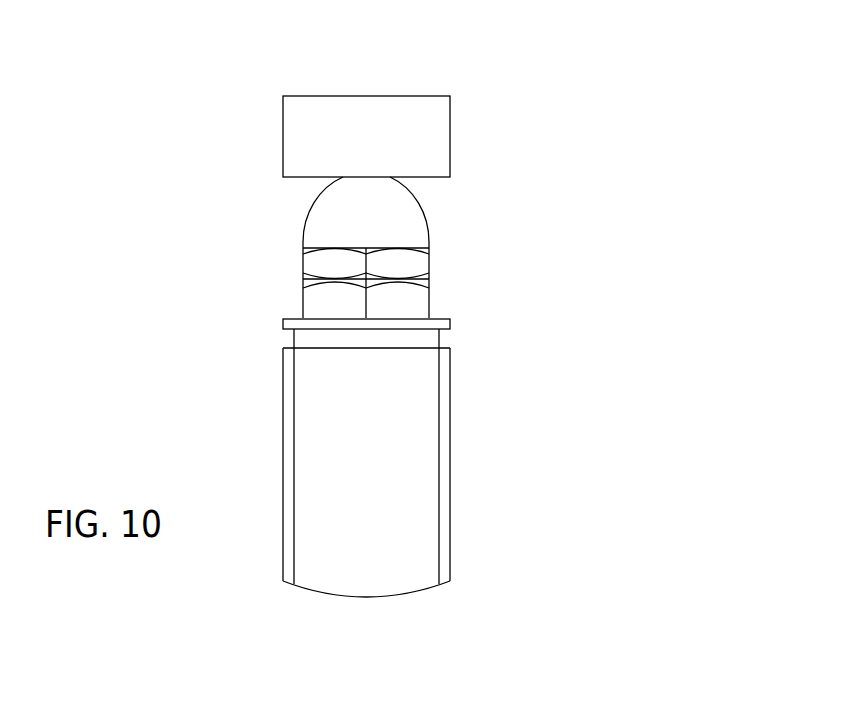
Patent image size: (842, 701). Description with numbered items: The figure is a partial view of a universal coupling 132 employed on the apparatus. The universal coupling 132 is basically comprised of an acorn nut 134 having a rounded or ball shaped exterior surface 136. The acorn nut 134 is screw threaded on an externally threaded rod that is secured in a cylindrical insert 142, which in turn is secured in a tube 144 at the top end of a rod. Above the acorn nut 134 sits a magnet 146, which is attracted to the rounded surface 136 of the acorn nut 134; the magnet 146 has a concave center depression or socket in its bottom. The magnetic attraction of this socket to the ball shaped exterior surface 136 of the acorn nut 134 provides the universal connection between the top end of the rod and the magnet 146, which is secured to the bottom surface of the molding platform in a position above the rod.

The universal coupling 132 is at (440, 65).
The acorn nut 134 is at (303, 236).
The rounded or ball shaped exterior surface 136 is at (330, 204).
The cylindrical insert 142 is at (305, 341).
The tube 144 is at (452, 465).
The magnet 146 is at (300, 126).